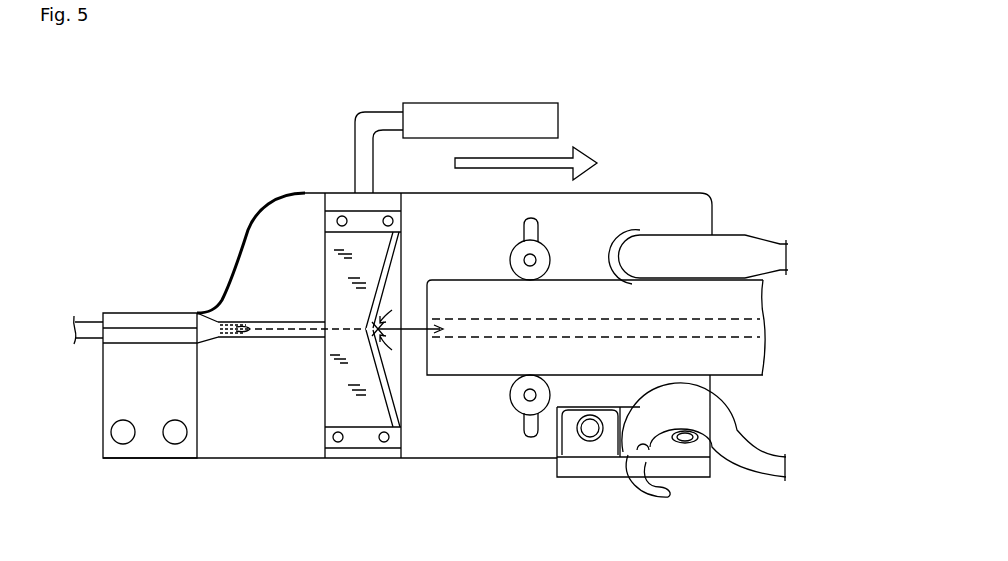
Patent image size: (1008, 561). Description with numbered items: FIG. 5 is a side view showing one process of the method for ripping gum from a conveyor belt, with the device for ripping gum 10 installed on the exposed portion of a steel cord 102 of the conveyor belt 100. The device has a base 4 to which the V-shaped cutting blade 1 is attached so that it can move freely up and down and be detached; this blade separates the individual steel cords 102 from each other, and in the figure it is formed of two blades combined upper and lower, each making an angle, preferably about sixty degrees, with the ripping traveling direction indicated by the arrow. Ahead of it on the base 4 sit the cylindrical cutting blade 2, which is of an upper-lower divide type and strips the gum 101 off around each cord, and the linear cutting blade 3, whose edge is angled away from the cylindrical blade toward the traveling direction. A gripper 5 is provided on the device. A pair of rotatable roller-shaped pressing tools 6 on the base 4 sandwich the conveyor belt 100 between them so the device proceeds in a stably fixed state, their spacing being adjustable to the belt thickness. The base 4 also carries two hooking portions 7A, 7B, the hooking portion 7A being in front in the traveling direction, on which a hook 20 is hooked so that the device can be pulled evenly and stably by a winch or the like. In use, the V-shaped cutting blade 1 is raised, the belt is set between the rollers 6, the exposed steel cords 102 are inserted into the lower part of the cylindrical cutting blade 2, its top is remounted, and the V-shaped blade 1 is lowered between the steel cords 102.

The device for ripping gum 10 is at (136, 126).
The V-shaped cutting blade 1 is at (330, 398).
The cylindrical cutting blade 2 is at (208, 341).
The linear cutting blade 3 is at (242, 341).
The base 4 is at (287, 212).
The gripper 5 is at (505, 118).
The roller-shaped pressing tool 6 is at (545, 257).
The hooking portion 7A is at (640, 232).
The hooking portion 7B is at (645, 452).
The hook 20 is at (735, 252).
The conveyor belt 100 is at (809, 295).
The gum 101 is at (730, 355).
The steel cord 102 is at (268, 327).